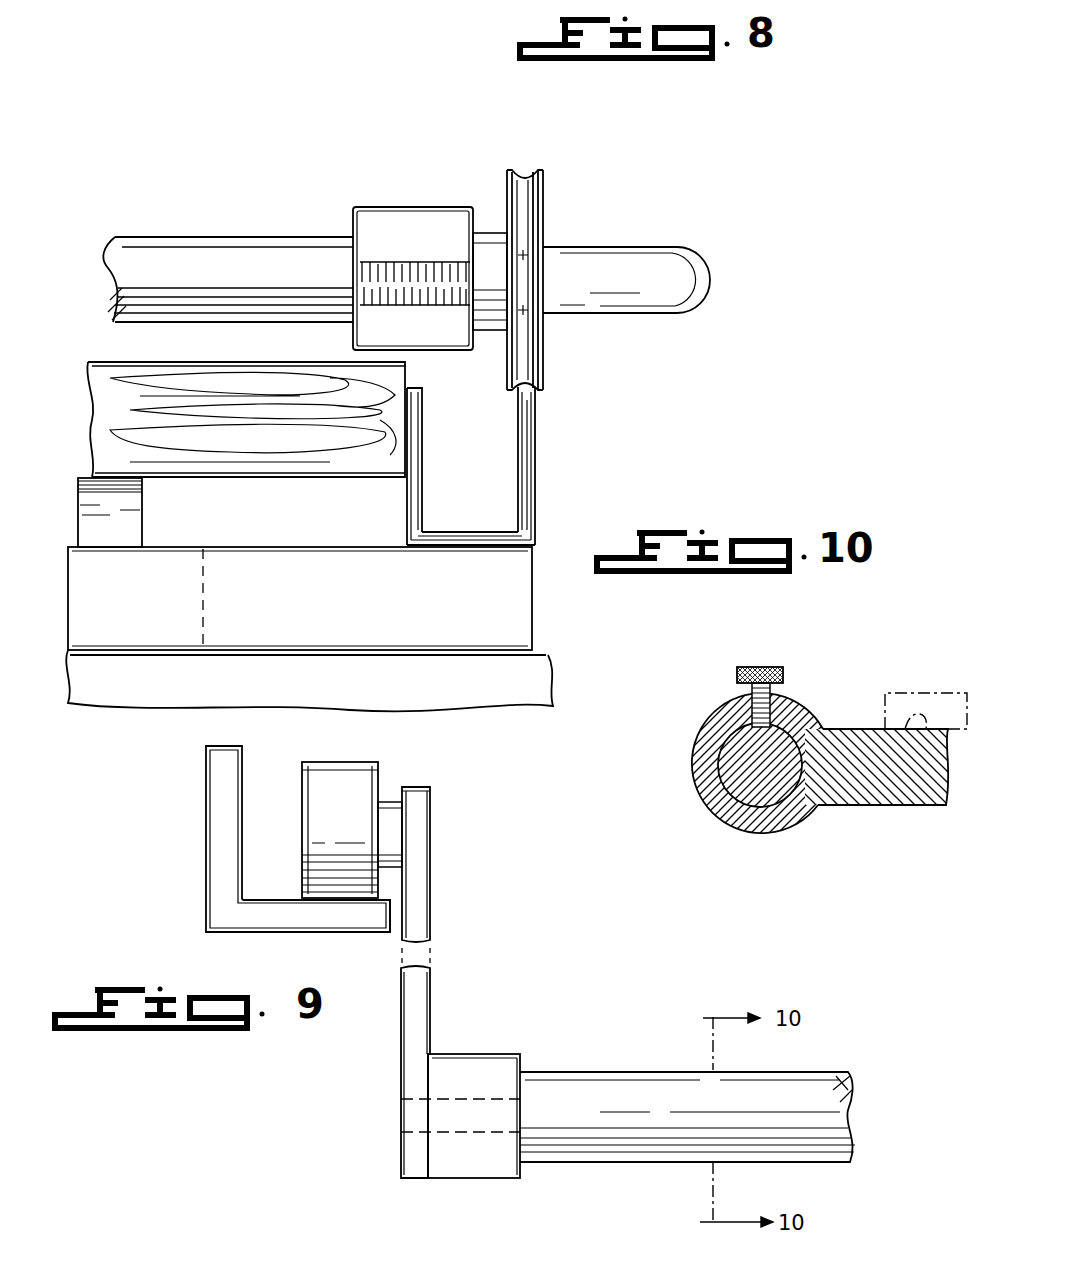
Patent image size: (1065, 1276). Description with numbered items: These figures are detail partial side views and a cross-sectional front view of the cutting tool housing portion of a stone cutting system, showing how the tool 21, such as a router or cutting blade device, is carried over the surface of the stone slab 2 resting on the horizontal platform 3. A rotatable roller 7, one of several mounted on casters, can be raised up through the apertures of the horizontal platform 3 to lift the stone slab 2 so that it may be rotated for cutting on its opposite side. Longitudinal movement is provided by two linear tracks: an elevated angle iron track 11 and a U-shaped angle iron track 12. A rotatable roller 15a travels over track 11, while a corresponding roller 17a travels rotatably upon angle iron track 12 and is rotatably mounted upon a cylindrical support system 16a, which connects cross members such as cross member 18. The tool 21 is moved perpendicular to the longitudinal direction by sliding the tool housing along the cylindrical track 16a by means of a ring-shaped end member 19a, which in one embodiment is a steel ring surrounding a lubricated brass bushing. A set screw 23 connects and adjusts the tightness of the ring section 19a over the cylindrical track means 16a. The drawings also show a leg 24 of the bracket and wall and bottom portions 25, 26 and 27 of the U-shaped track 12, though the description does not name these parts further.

In FIG. 8, the stone slab 2 is at (92, 362).
In FIG. 8, the horizontal platform 3 is at (515, 612).
In FIG. 8, the rotatable roller 7 is at (78, 480).
In FIG. 9, the linear track 11 is at (215, 808).
In FIG. 8, the linear track 12 is at (528, 425).
In FIG. 9, the rotatable roller 15a is at (365, 773).
In FIG. 9, the cylindrical support system 16a is at (422, 1012).
In FIG. 10, the cylindrical support system 16a is at (773, 780).
In FIG. 8, the roller 17a is at (547, 210).
In FIG. 9, the cross member 18 is at (478, 1167).
In FIG. 10, the ring-shaped end member 19a is at (743, 830).
In FIG. 8, the tool 21 is at (673, 258).
In FIG. 10, the set screw 23 is at (783, 692).
In FIG. 9, the bracket base leg 24 is at (303, 922).
In FIG. 8, the channel right wall 25 is at (525, 488).
In FIG. 8, the channel bottom 26 is at (460, 537).
In FIG. 8, the channel left wall 27 is at (420, 450).